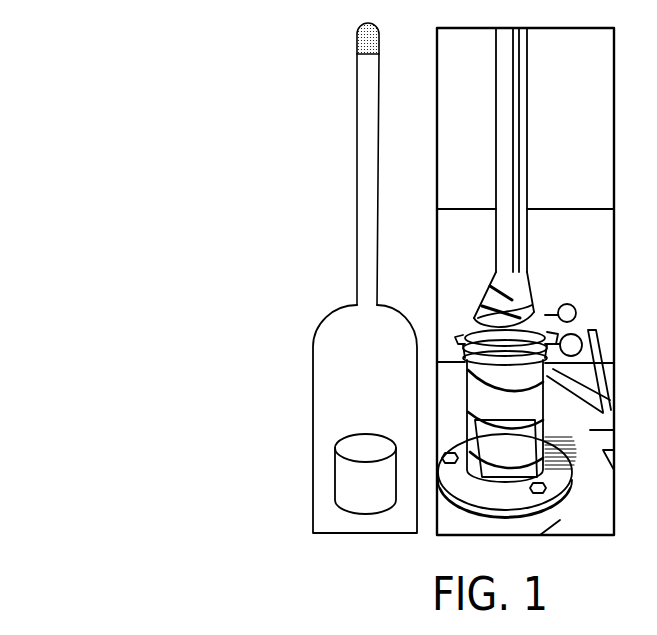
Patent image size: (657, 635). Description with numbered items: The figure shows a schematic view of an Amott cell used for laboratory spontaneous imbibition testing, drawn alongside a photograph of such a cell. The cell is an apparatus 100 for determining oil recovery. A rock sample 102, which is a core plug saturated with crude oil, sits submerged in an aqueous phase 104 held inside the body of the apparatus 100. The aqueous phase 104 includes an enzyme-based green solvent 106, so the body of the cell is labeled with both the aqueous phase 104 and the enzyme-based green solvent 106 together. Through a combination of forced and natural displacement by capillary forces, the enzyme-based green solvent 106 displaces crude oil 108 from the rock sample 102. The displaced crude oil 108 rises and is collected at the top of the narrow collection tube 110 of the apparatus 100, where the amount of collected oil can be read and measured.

The apparatus 100 is at (168, 94).
The rock sample 102 is at (342, 484).
The aqueous phase 104 is at (313, 380).
The enzyme-based green solvent 106 is at (365, 419).
The crude oil 108 is at (357, 40).
The collection tube 110 is at (357, 152).